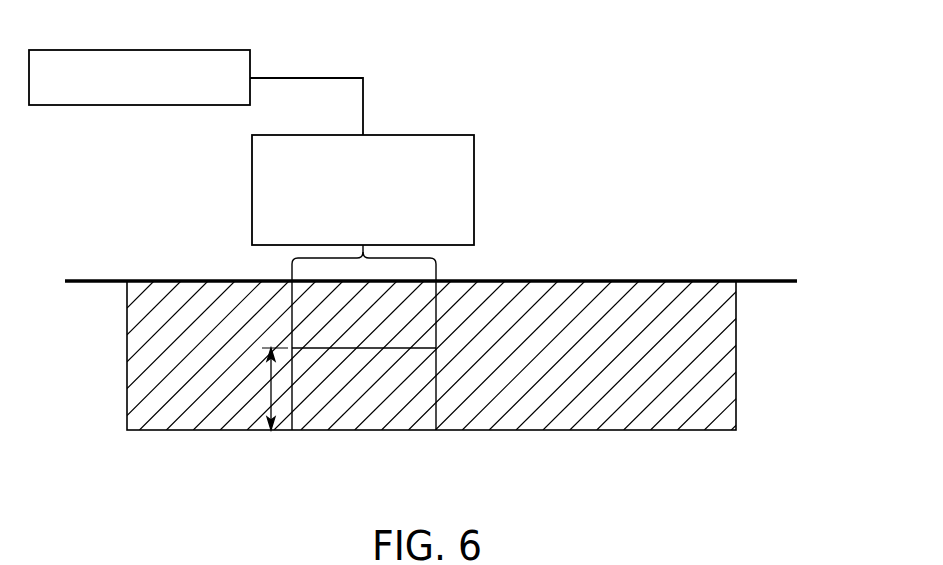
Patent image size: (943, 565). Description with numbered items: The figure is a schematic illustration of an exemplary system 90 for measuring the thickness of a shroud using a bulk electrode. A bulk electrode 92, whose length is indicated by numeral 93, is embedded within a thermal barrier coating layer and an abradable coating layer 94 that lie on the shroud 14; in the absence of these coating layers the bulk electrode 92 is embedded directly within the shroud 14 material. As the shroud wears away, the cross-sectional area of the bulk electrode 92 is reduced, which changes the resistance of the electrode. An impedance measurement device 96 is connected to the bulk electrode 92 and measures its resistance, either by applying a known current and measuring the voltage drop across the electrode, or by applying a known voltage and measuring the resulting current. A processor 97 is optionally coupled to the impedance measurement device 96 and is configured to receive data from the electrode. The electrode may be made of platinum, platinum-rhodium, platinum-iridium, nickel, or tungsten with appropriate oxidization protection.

The system 90 is at (738, 72).
The processor 97 is at (100, 49).
The impedance measurement device 96 is at (475, 187).
The shroud 14 is at (748, 280).
The abradable coating layer 94 is at (728, 363).
The bulk electrode 92 is at (373, 422).
The length of bulk electrode 93 is at (270, 396).